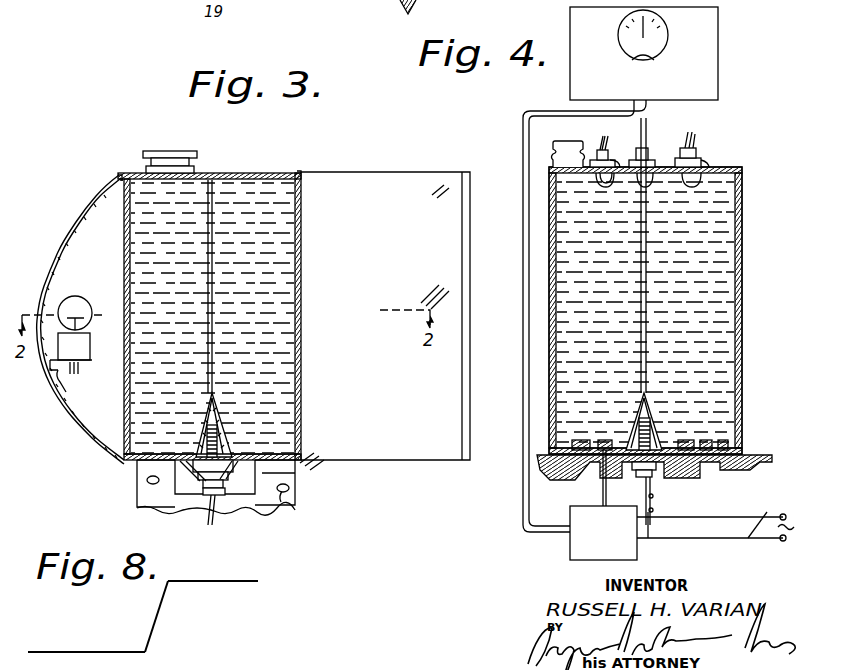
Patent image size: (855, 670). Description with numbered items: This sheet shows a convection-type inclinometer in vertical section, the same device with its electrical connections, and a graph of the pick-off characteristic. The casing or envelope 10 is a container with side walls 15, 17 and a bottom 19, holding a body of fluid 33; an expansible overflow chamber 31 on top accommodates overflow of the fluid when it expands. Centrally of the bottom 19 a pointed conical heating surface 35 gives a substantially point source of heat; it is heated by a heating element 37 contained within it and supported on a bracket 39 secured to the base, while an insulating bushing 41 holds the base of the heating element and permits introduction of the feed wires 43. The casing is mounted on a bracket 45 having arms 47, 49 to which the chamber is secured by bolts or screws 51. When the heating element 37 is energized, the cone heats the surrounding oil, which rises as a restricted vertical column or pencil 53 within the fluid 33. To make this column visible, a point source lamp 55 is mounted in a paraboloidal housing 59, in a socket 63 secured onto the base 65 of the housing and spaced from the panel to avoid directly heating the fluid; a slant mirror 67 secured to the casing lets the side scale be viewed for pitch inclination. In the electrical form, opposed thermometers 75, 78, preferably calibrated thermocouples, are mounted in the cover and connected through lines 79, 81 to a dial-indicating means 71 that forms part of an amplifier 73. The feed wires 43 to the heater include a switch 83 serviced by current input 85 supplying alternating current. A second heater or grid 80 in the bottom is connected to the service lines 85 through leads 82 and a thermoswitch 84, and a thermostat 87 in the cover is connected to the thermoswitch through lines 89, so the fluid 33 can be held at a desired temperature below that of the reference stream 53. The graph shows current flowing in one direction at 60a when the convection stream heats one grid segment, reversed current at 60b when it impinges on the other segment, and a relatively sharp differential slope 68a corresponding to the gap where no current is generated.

In FIG. 3, the casing or envelope 10 is at (266, 174).
In FIG. 4, the casing or envelope 10 is at (738, 165).
In FIG. 3, the side wall 15 is at (304, 342).
In FIG. 4, the side wall 15 is at (742, 294).
In FIG. 3, the side wall 17 is at (136, 385).
In FIG. 4, the side wall 17 is at (546, 370).
In FIG. 3, the bottom 19 is at (158, 456).
In FIG. 4, the bottom 19 is at (730, 442).
In FIG. 3, the expansible overflow chamber 31 is at (163, 150).
In FIG. 4, the expansible overflow chamber 31 is at (570, 150).
In FIG. 3, the fluid 33 is at (212, 316).
In FIG. 4, the fluid 33 is at (645, 310).
In FIG. 3, the conical heating surface 35 is at (216, 422).
In FIG. 4, the conical heating surface 35 is at (638, 420).
In FIG. 3, the heating element 37 is at (218, 442).
In FIG. 4, the heating element 37 is at (630, 434).
In FIG. 3, the bracket 39 is at (206, 476).
In FIG. 3, the insulating bushing 41 is at (212, 494).
In FIG. 4, the insulating bushing 41 is at (657, 472).
In FIG. 3, the feed wires 43 is at (228, 520).
In FIG. 4, the feed wires 43 is at (642, 494).
In FIG. 3, the bracket 45 is at (282, 518).
In FIG. 3, the arm 47 is at (296, 474).
In FIG. 3, the arm 49 is at (145, 472).
In FIG. 3, the bolts or screws 51 is at (148, 481).
In FIG. 3, the vertical column or pencil 53 is at (212, 314).
In FIG. 4, the vertical column or pencil 53 is at (646, 301).
In FIG. 3, the point source lamp 55 is at (79, 299).
In FIG. 3, the housing 59 is at (70, 239).
In FIG. 3, the socket 63 is at (80, 348).
In FIG. 3, the base 65 is at (72, 388).
In FIG. 3, the slant mirror 67 is at (387, 172).
In FIG. 4, the dial-indicating means 71 is at (618, 42).
In FIG. 4, the amplifier 73 is at (718, 34).
In FIG. 4, the thermometer 75 is at (713, 154).
In FIG. 4, the thermometer 78 is at (622, 152).
In FIG. 4, the line 79 is at (657, 100).
In FIG. 4, the second heater or grid 80 is at (589, 438).
In FIG. 4, the line 81 is at (628, 128).
In FIG. 4, the leads 82 is at (596, 496).
In FIG. 4, the switch 83 is at (657, 506).
In FIG. 4, the thermoswitch 84 is at (600, 554).
In FIG. 4, the current input 85 is at (761, 512).
In FIG. 4, the thermostat 87 is at (655, 156).
In FIG. 4, the lines 89 is at (524, 312).
In FIG. 8, the current in one direction 60a is at (238, 578).
In FIG. 8, the reversed current 60b is at (90, 652).
In FIG. 8, the slope 68a is at (160, 616).